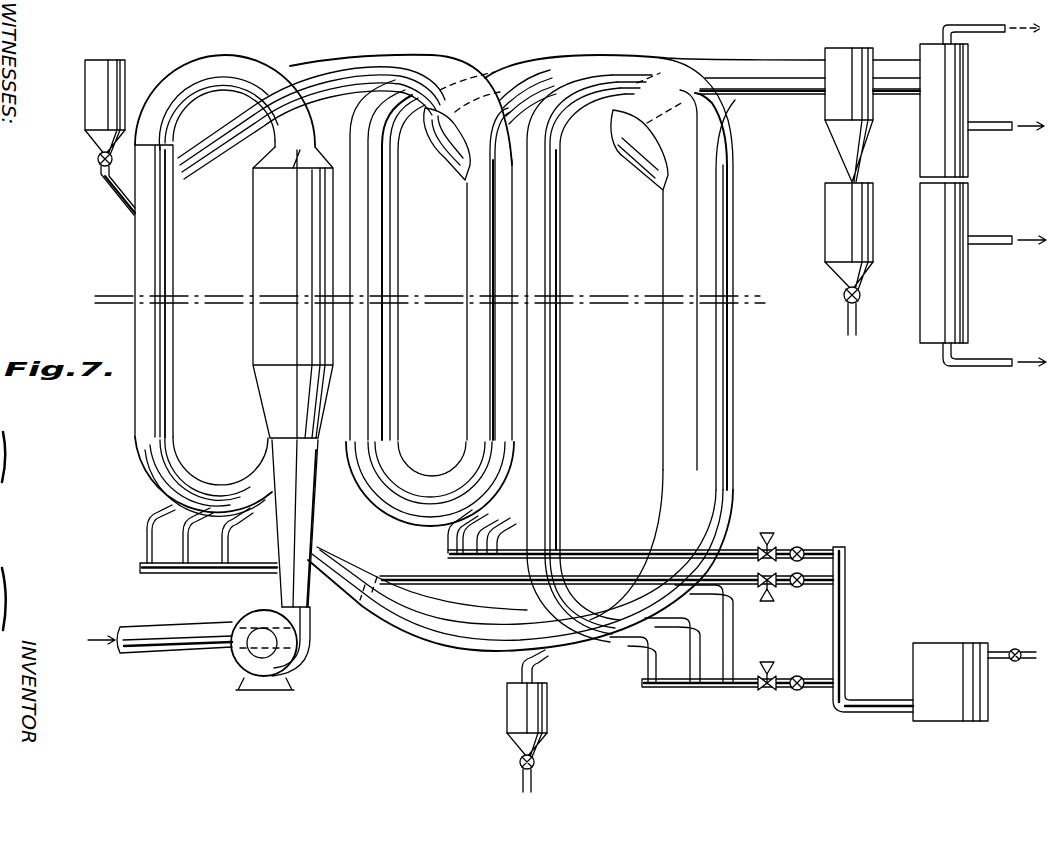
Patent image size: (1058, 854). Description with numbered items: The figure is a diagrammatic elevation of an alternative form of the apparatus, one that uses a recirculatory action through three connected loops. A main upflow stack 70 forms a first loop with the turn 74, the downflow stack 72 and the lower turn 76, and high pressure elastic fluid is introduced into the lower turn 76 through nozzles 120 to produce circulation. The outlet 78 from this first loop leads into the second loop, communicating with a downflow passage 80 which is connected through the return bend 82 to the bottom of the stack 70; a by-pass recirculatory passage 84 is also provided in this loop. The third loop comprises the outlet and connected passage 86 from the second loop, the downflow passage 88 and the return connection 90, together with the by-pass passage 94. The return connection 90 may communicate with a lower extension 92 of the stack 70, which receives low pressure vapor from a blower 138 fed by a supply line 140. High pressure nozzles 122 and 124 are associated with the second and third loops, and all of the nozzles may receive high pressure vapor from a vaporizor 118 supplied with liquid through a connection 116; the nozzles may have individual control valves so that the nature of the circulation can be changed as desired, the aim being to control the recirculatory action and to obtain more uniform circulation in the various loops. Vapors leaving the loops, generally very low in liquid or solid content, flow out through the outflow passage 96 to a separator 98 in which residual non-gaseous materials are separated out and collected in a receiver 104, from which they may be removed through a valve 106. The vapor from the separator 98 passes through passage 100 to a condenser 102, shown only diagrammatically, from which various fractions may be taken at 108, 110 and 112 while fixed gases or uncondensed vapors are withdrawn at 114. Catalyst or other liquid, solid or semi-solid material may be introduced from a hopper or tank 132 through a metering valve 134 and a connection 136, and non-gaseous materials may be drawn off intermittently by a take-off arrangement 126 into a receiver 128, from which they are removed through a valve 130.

The main upflow stack 70 is at (258, 340).
The downflow stack 72 is at (166, 230).
The turn 74 is at (246, 60).
The lower turn 76 is at (213, 483).
The outlet 78 is at (398, 62).
The downflow passage 80 is at (478, 226).
The return bend 82 is at (392, 518).
The by-pass recirculatory passage 84 is at (383, 356).
The outlet and connected passage 86 is at (588, 62).
The downflow passage 88 is at (733, 258).
The return connection 90 is at (452, 638).
The lower extension of the stack 92 is at (293, 512).
The by-pass passage 94 is at (558, 358).
The outlet pipe 96 is at (738, 62).
The separator 98 is at (836, 54).
The passage 100 is at (890, 60).
The condenser 102 is at (964, 100).
The receiver 104 is at (862, 230).
The valve 106 is at (861, 295).
The fraction outlet 108 is at (985, 132).
The fraction outlet 110 is at (988, 244).
The fraction outlet 112 is at (986, 360).
The fixed gas outlet 114 is at (978, 30).
The connection 116 is at (1014, 650).
The vaporizor 118 is at (940, 652).
The nozzles 120 is at (176, 510).
The high pressure nozzles 122 is at (486, 522).
The high pressure nozzles 124 is at (686, 598).
The take-off arrangement 126 is at (522, 671).
The receiver 128 is at (543, 712).
The valve 130 is at (535, 761).
The tank 132 is at (94, 97).
The metering valve 134 is at (98, 158).
The connection 136 is at (118, 196).
The blower 138 is at (300, 649).
The supply line 140 is at (170, 629).